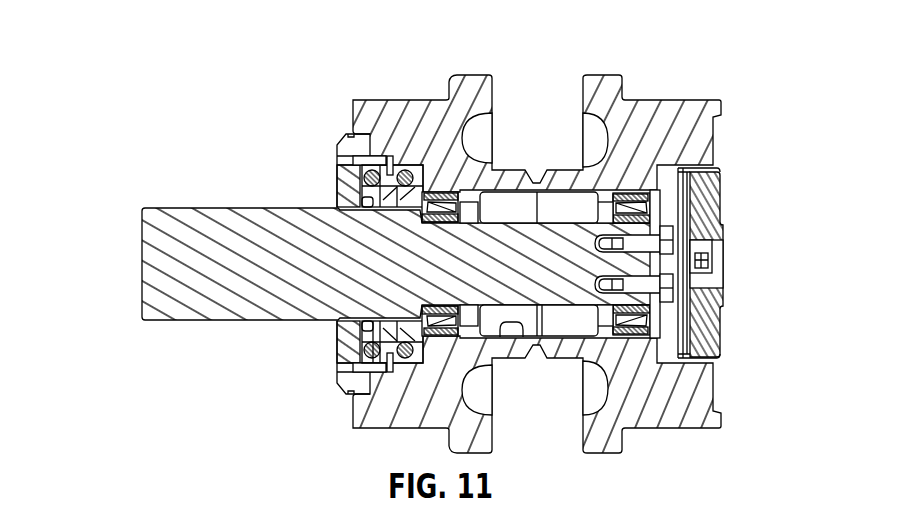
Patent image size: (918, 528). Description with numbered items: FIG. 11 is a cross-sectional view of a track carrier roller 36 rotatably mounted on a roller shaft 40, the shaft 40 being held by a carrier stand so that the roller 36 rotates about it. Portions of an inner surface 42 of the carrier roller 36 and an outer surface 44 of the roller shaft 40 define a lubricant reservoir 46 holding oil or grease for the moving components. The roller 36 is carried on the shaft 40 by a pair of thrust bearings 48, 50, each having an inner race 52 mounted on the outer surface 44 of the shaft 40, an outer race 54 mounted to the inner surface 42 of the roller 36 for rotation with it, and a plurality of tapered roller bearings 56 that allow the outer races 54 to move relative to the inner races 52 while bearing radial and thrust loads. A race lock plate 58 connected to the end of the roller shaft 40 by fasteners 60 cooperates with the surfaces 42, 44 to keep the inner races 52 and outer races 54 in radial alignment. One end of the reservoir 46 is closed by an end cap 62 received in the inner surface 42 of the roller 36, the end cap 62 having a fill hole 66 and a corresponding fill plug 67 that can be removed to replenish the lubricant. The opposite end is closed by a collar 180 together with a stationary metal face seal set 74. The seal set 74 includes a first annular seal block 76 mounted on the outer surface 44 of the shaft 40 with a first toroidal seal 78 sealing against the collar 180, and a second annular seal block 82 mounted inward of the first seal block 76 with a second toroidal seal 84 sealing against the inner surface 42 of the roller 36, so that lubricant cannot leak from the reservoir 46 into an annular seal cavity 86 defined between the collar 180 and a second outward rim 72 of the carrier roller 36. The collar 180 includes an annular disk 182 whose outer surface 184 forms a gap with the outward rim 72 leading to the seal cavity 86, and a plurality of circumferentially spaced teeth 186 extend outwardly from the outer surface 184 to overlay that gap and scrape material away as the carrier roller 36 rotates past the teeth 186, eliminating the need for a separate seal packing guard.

The carrier roller 36 is at (703, 403).
The roller shaft 40 is at (242, 288).
The inner surface 42 is at (503, 323).
The outer surface 44 is at (550, 327).
The lubricant reservoir 46 is at (557, 205).
The thrust bearing 48 is at (445, 325).
The thrust bearing 50 is at (633, 203).
The inner race 52 is at (660, 215).
The outer race 54 is at (440, 193).
The tapered roller bearings 56 is at (447, 206).
The race lock plate 58 is at (660, 308).
The fasteners 60 is at (668, 238).
The end cap 62 is at (707, 177).
The fill hole 66 is at (705, 258).
The fill plug 67 is at (710, 265).
The second outward rim 72 is at (372, 168).
The stationary metal face seal set 74 is at (415, 170).
The first annular seal block 76 is at (364, 349).
The first toroidal seal 78 is at (368, 356).
The second annular seal block 82 is at (385, 332).
The second toroidal seal 84 is at (413, 333).
The annular seal cavity 86 is at (406, 152).
The collar 180 is at (337, 193).
The annular disk 182 is at (360, 177).
The outer surface 184 is at (360, 155).
The teeth 186 is at (347, 147).